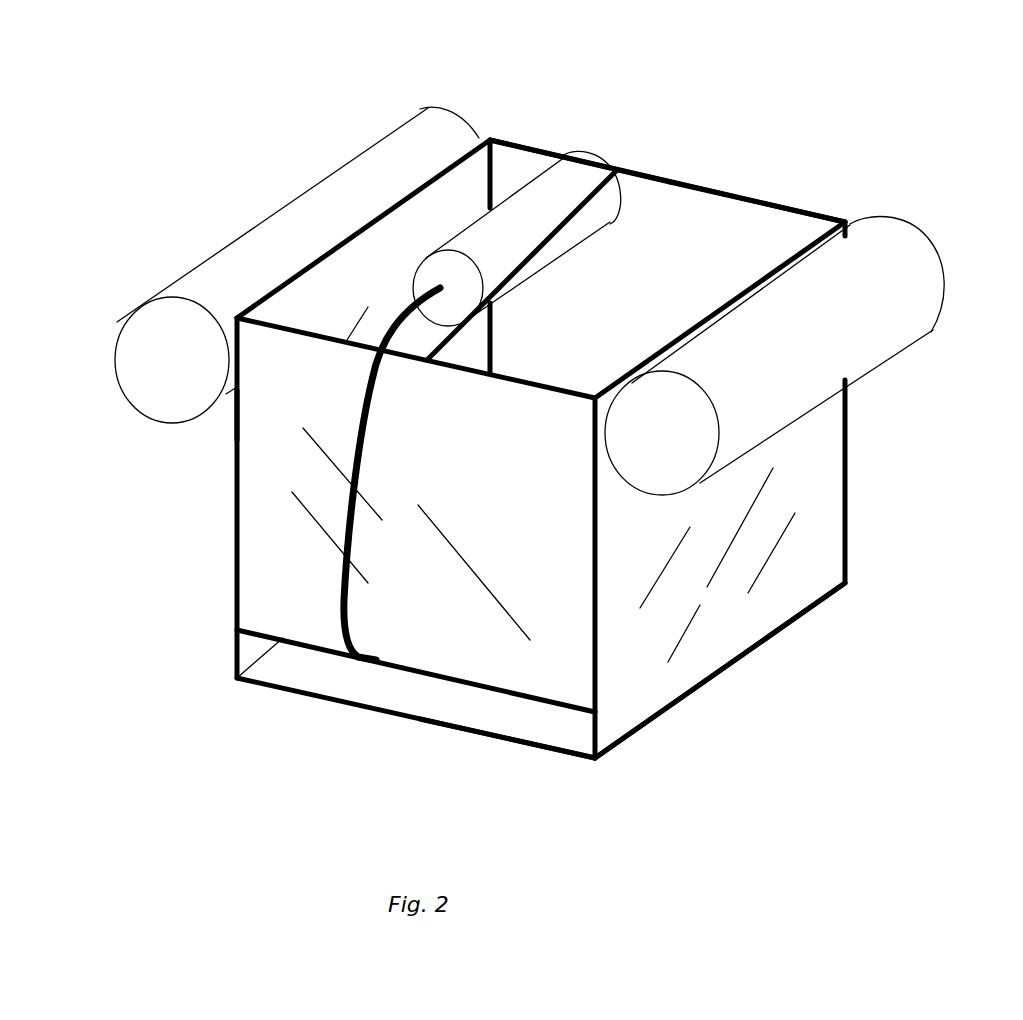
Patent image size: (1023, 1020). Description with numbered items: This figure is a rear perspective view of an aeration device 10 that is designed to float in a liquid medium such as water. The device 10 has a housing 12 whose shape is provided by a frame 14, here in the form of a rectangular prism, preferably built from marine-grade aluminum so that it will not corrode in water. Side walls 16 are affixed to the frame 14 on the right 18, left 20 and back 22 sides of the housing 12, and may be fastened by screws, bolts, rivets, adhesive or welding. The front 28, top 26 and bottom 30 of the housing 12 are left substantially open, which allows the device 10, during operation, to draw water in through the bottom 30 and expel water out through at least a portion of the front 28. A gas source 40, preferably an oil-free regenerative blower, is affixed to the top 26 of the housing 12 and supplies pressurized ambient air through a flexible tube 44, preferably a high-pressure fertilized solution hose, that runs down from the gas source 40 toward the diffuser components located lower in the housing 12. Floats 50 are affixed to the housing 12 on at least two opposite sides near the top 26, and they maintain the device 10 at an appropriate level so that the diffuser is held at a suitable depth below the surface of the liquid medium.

The device 10 is at (158, 58).
The housing 12 is at (205, 575).
The frame 14 is at (237, 512).
The side walls 16 is at (445, 200).
The right side 18 is at (823, 630).
The left side 20 is at (175, 437).
The back side 22 is at (283, 718).
The top 26 is at (685, 130).
The front 28 is at (820, 178).
The bottom 30 is at (508, 755).
The gas source 40 is at (578, 175).
The flexible tube 44 is at (372, 450).
The floats 50 is at (330, 202).